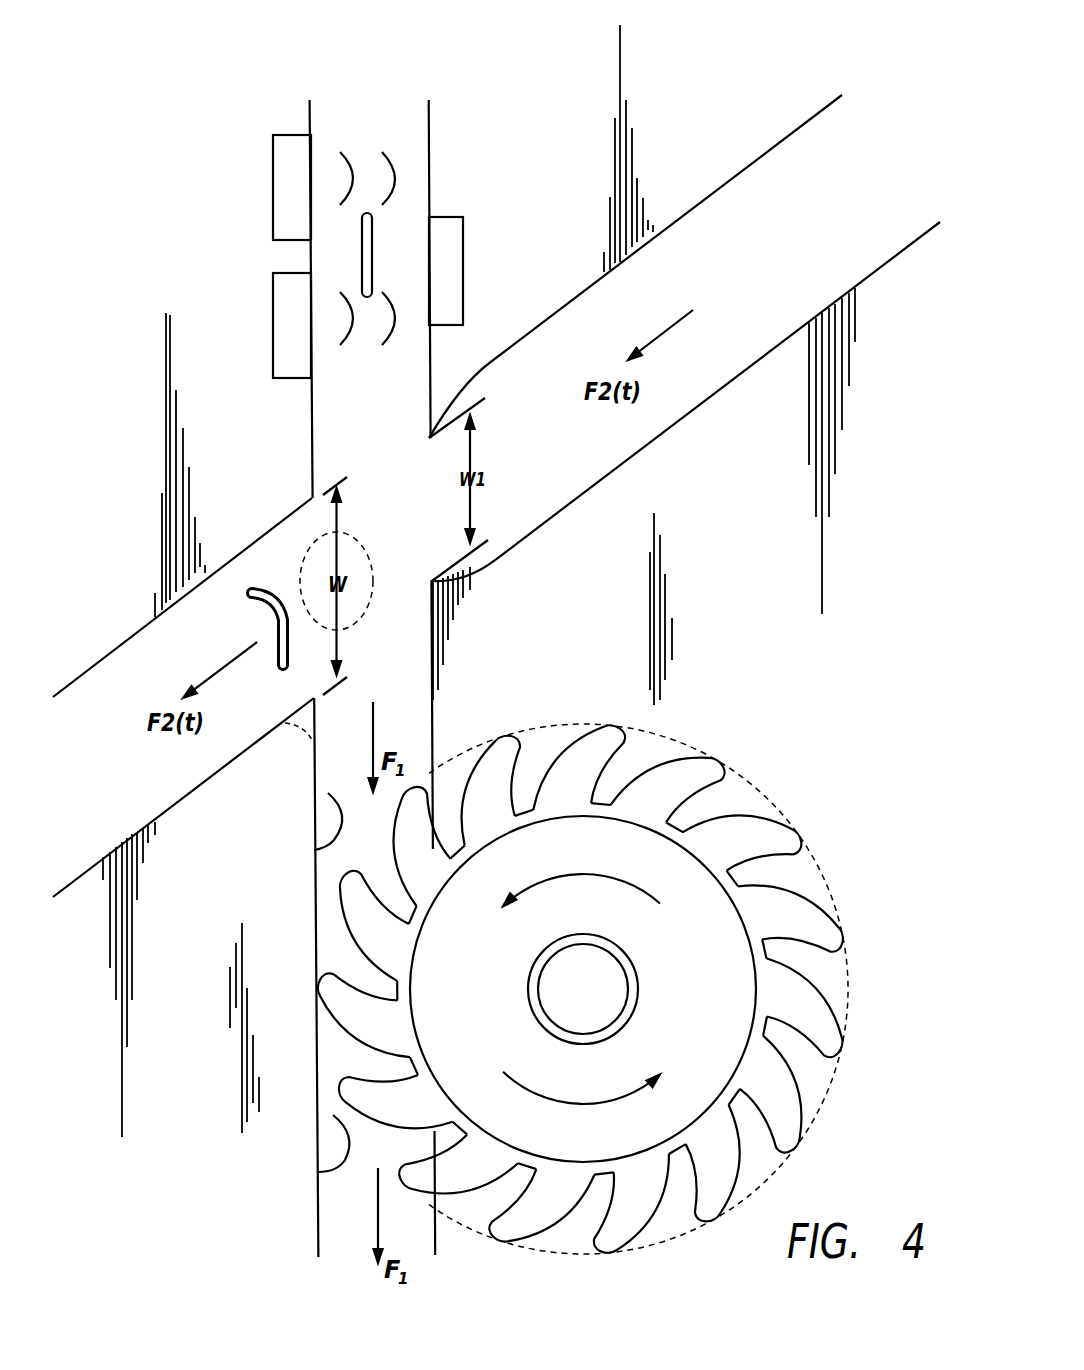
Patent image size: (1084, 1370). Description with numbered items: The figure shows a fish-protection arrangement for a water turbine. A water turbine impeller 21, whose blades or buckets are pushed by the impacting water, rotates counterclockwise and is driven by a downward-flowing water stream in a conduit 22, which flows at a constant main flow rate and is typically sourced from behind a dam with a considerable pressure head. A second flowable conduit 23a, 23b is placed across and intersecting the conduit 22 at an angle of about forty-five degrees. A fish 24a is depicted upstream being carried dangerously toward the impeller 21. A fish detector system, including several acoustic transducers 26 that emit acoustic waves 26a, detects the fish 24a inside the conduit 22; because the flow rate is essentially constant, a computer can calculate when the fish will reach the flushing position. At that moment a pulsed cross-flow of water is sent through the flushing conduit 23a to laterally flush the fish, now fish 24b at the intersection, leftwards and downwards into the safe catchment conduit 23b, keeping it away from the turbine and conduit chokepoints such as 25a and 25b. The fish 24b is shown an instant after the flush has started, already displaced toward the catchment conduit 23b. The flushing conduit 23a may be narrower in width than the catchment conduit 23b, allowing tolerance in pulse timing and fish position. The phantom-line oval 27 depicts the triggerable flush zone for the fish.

The water turbine impeller 21 is at (673, 868).
The conduit 22 is at (342, 1207).
The flushing conduit 23a is at (835, 250).
The catchment conduit 23b is at (90, 697).
The fish 24a is at (367, 256).
The fish 24b is at (283, 617).
The chokepoint 25a is at (314, 850).
The chokepoint 25b is at (318, 1172).
The acoustic transducer 26 is at (273, 186).
The acoustic waves 26a is at (398, 177).
The phantom-line oval 27 is at (372, 567).